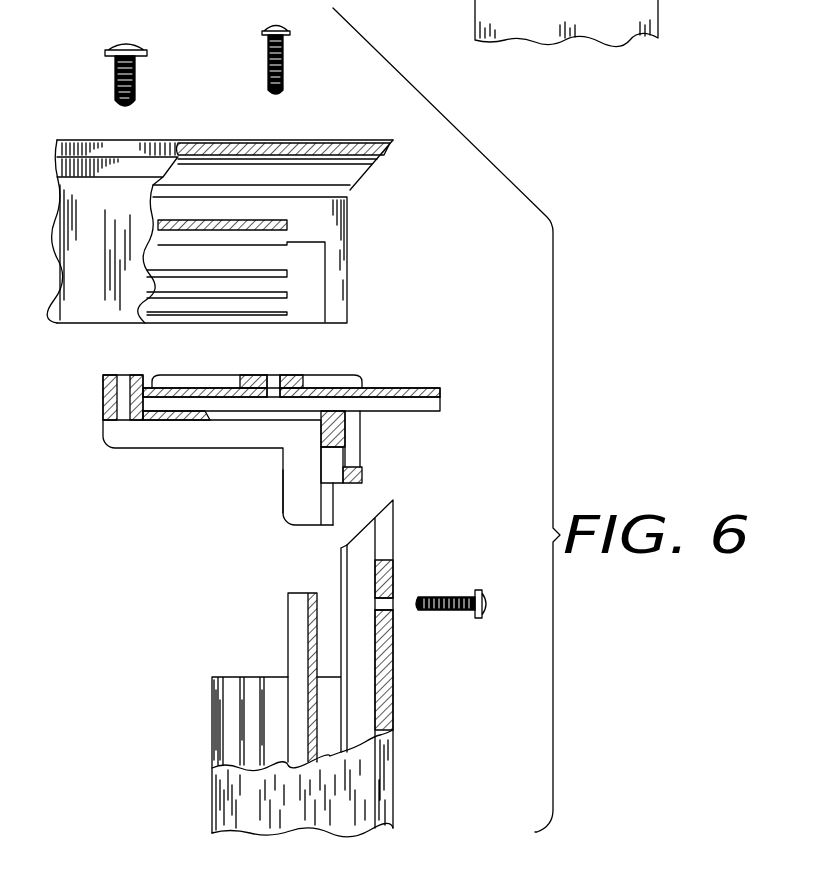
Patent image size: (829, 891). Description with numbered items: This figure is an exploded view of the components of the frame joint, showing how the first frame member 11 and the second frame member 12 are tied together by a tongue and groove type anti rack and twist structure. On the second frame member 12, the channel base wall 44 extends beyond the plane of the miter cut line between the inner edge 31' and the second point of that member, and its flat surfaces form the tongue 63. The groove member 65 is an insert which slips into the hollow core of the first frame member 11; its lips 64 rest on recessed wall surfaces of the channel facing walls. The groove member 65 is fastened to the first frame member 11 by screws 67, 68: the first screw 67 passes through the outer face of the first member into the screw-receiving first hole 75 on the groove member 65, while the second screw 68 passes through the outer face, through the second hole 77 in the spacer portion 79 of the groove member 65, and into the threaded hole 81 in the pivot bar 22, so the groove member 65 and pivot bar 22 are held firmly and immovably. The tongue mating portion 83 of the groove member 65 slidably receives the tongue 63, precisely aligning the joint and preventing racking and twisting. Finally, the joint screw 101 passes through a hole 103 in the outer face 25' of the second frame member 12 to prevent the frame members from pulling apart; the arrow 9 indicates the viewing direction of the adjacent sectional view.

The viewing direction arrow 9 is at (468, 242).
The first frame member 11 is at (87, 140).
The second frame member 12 is at (395, 762).
The pivot bar 22 is at (443, 390).
The outer face 25' is at (398, 664).
The inner edge 31' is at (199, 658).
The channel base wall 44 is at (293, 712).
The tongue 63 is at (287, 618).
The lips 64 is at (334, 503).
The groove member 65 is at (185, 448).
The first screw 67 is at (140, 43).
The second screw 68 is at (288, 26).
The screw-receiving first hole 75 is at (119, 373).
The second hole 77 is at (275, 386).
The spacer portion 79 is at (205, 373).
The threaded hole 81 is at (273, 398).
The tongue mating portion 83 is at (293, 512).
The joint screw 101 is at (487, 603).
The hole 103 is at (385, 607).